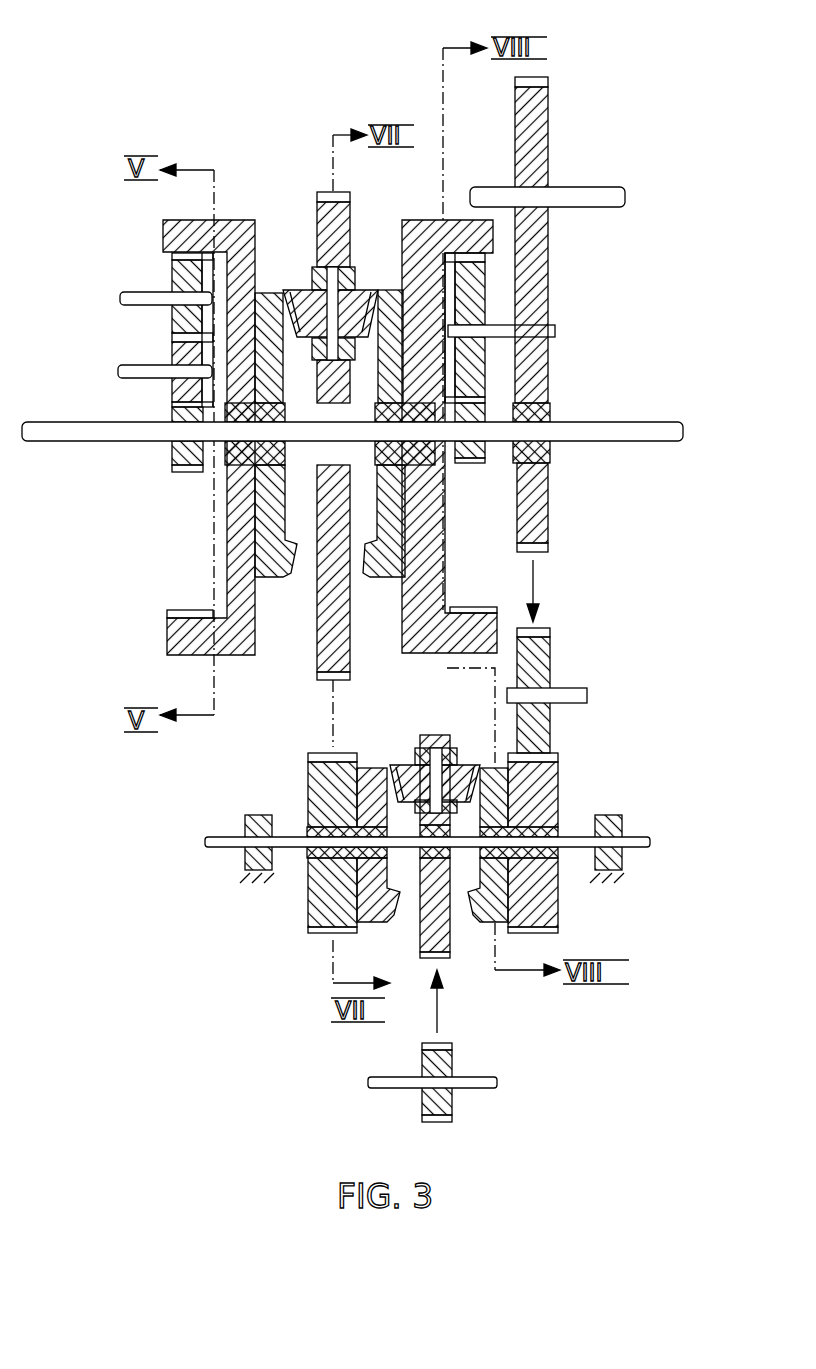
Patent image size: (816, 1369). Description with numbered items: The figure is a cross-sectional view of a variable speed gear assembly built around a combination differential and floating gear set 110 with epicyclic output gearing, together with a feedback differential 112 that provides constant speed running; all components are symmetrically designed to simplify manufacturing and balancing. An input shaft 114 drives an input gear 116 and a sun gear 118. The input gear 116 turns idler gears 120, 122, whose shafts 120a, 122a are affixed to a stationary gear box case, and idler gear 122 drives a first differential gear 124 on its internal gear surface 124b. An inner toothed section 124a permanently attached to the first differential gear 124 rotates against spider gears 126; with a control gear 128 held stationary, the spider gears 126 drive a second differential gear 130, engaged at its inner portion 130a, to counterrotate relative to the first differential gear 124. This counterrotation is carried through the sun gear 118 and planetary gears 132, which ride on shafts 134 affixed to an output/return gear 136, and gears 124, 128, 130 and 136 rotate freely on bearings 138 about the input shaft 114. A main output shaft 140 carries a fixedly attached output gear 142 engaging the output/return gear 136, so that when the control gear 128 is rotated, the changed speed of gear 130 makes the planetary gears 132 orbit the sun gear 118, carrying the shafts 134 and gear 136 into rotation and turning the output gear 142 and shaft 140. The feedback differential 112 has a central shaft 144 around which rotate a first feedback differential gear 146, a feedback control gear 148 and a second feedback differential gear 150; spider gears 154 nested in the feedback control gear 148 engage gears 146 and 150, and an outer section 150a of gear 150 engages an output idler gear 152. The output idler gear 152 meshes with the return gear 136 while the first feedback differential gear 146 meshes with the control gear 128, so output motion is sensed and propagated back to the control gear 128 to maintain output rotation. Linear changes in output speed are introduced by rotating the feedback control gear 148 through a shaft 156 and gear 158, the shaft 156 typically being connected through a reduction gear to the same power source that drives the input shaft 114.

The combination differential and floating gear set 110 is at (578, 70).
The feedback differential 112 is at (596, 723).
The input shaft 114 is at (95, 441).
The input gear 116 is at (197, 477).
The sun gear 118 is at (465, 466).
The idler gear 120 is at (172, 388).
The idler gear shaft 120a is at (137, 367).
The idler gear 122 is at (172, 278).
The idler gear shaft 122a is at (128, 293).
The first differential gear 124 is at (183, 220).
The inner toothed section 124a is at (262, 580).
The internal gear surface 124b is at (193, 612).
The spider gear 126 is at (308, 287).
The control gear 128 is at (325, 193).
The second differential gear 130 is at (427, 220).
The inner portion 130a is at (380, 580).
The planetary gear 132 is at (487, 297).
The planetary gear shaft 134 is at (495, 323).
The output/return gear 136 is at (547, 367).
The bearing 138 is at (553, 412).
The main output shaft 140 is at (553, 187).
The output gear 142 is at (547, 112).
The central shaft 144 is at (290, 837).
The first feedback differential gear 146 is at (317, 753).
The feedback control gear 148 is at (430, 735).
The second feedback differential gear 150 is at (483, 762).
The outer section 150a is at (560, 780).
The output idler gear 152 is at (550, 648).
The spider gear 154 is at (405, 763).
The shaft 156 is at (483, 1088).
The gear 158 is at (453, 1063).